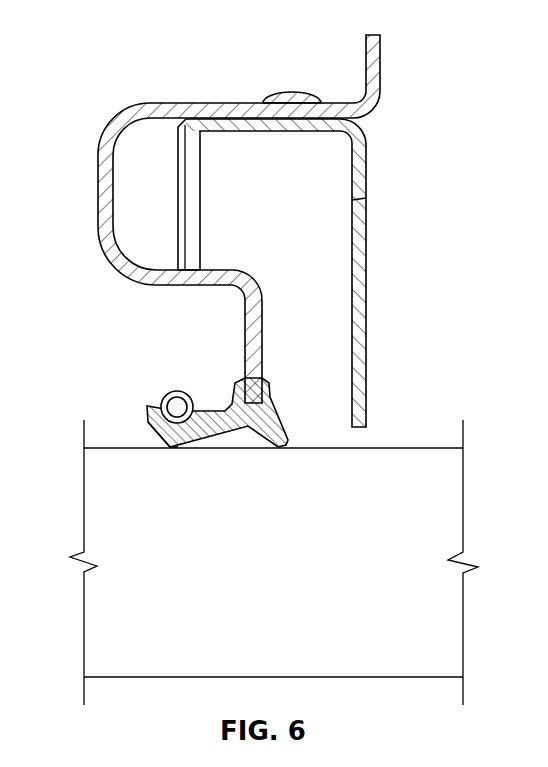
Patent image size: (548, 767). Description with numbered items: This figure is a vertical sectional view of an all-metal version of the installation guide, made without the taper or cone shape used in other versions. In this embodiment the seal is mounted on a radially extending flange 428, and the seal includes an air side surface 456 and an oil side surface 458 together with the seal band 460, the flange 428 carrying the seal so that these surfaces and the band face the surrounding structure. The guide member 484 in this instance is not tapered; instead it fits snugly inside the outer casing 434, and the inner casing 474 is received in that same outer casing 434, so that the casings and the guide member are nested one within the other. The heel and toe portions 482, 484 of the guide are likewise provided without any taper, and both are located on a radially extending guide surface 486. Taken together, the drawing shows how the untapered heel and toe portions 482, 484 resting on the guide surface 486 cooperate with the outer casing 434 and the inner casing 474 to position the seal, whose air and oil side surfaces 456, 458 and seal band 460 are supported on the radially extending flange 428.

The radially extending flange 428 is at (247, 328).
The outer casing 434 is at (233, 110).
The inner casing 474 is at (270, 131).
The heel portion 482 is at (362, 170).
The radially extending guide surface 486 is at (360, 292).
The toe portion of guide member 484 is at (360, 410).
The air side surface 456 is at (200, 448).
The oil side surface 458 is at (148, 421).
The seal band 460 is at (175, 449).